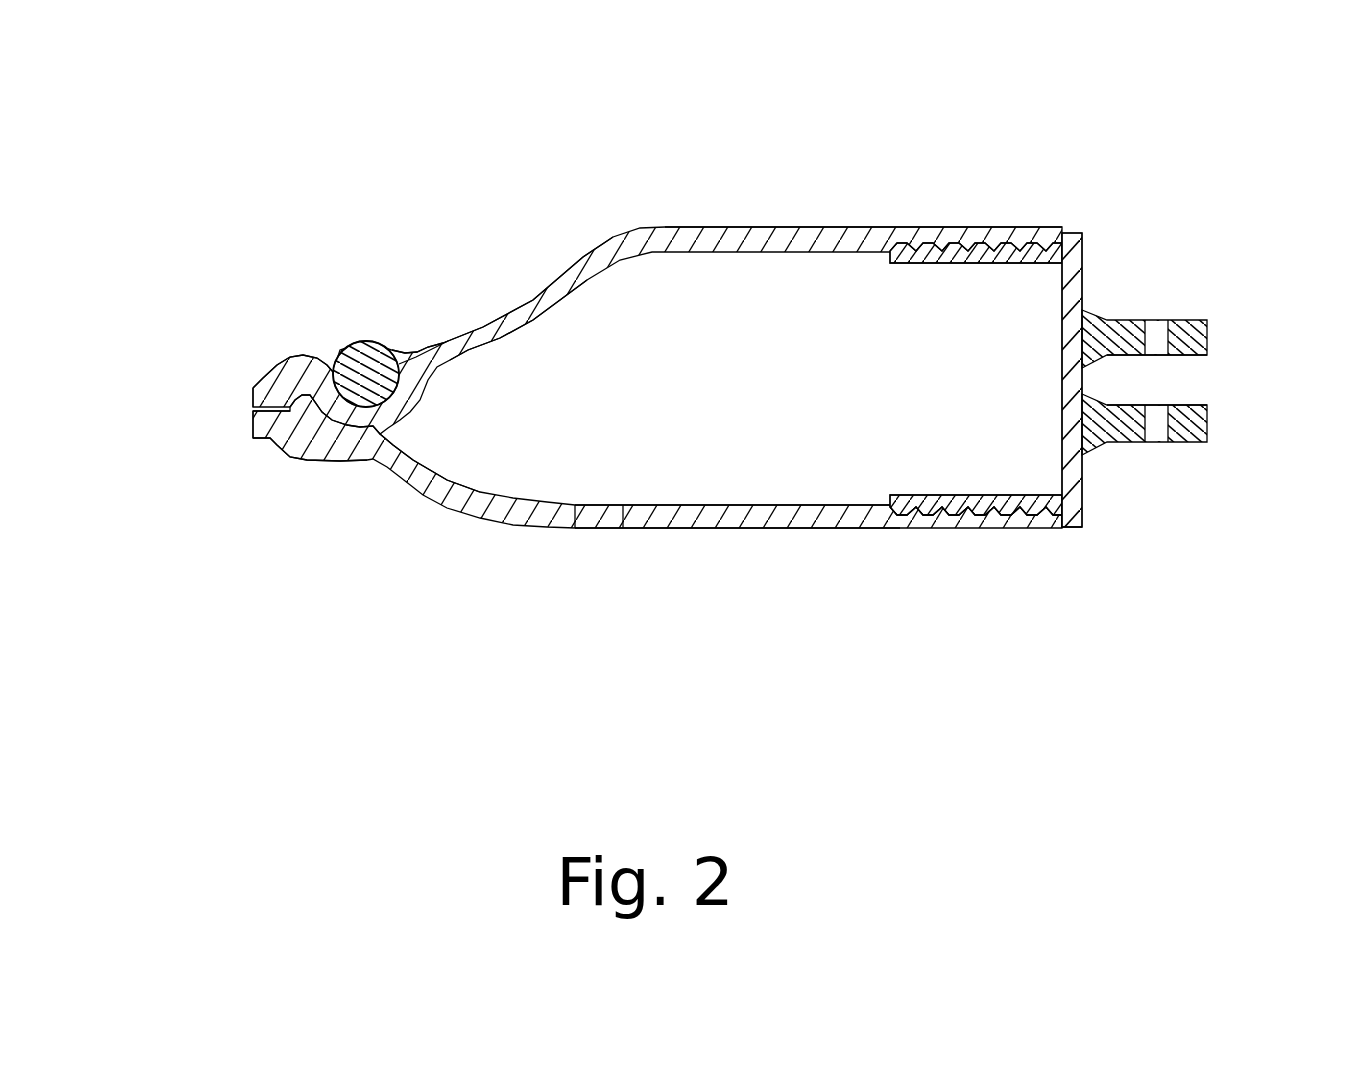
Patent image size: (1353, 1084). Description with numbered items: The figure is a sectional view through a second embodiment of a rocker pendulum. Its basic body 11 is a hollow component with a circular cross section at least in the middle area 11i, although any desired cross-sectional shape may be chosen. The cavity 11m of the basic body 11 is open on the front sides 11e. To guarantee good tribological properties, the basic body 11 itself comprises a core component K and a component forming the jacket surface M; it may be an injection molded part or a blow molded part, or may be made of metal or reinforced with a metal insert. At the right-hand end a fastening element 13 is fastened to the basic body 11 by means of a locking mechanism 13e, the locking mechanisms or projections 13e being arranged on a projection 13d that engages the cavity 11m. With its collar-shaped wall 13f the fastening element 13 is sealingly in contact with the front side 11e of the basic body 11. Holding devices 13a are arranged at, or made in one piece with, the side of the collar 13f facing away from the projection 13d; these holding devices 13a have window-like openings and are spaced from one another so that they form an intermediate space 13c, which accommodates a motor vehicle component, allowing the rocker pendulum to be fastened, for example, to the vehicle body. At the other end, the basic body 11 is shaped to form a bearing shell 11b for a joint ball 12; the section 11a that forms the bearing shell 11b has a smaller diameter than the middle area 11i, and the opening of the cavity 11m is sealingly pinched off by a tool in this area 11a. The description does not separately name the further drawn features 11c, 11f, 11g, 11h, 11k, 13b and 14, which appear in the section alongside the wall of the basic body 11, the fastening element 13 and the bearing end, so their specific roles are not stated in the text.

The basic body 11 is at (712, 213).
The section forming the bearing shell 11a is at (383, 436).
The bearing shell 11b is at (340, 368).
The wall hump 11c is at (397, 350).
The front side 11e is at (250, 393).
The outer wall surface 11f is at (700, 534).
The inner wall surface 11g is at (691, 504).
The serrated engagement portion 11h is at (902, 508).
The middle area 11i is at (813, 240).
The inclined shoulder wall 11k is at (525, 320).
The cavity 11m is at (770, 387).
The joint ball 12 is at (354, 343).
The fastening element 13 is at (1088, 268).
The holding device 13a is at (1118, 332).
The lower nozzle 13b is at (1160, 428).
The intermediate space 13c is at (1155, 379).
The projection 13d is at (957, 264).
The locking mechanism 13e is at (975, 499).
The collar-shaped wall 13f is at (1082, 529).
The lower flange 14 is at (253, 438).
The component forming the jacket surface M is at (557, 529).
The core component K is at (623, 531).